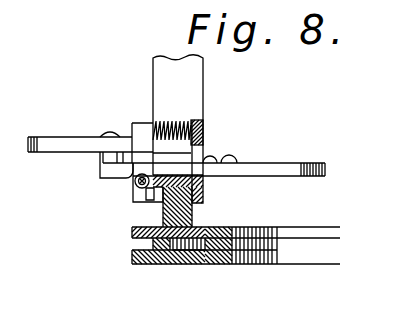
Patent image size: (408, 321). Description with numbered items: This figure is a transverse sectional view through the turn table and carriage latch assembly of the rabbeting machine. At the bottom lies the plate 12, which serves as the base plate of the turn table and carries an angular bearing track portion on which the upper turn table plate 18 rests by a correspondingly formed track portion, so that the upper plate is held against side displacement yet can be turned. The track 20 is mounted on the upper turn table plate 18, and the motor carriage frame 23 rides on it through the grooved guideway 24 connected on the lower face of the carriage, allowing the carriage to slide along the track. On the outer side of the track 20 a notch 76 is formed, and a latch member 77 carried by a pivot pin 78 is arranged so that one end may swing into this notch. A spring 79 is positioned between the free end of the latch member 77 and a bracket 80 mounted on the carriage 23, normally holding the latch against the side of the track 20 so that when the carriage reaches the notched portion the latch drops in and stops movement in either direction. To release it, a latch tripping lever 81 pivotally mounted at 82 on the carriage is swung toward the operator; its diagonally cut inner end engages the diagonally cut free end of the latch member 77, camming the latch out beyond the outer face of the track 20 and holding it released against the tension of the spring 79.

The plate 12 is at (229, 265).
The upper turn table plate 18 is at (230, 228).
The track 20 is at (177, 226).
The motor carriage frame 23 is at (268, 169).
The grooved guideway 24 is at (204, 185).
The notch 76 is at (163, 208).
The latch member 77 is at (138, 203).
The pivot pin 78 is at (135, 183).
The spring 79 is at (172, 122).
The bracket 80 is at (204, 143).
The latch tripping lever 81 is at (46, 153).
The pivotal mounting 82 is at (110, 139).